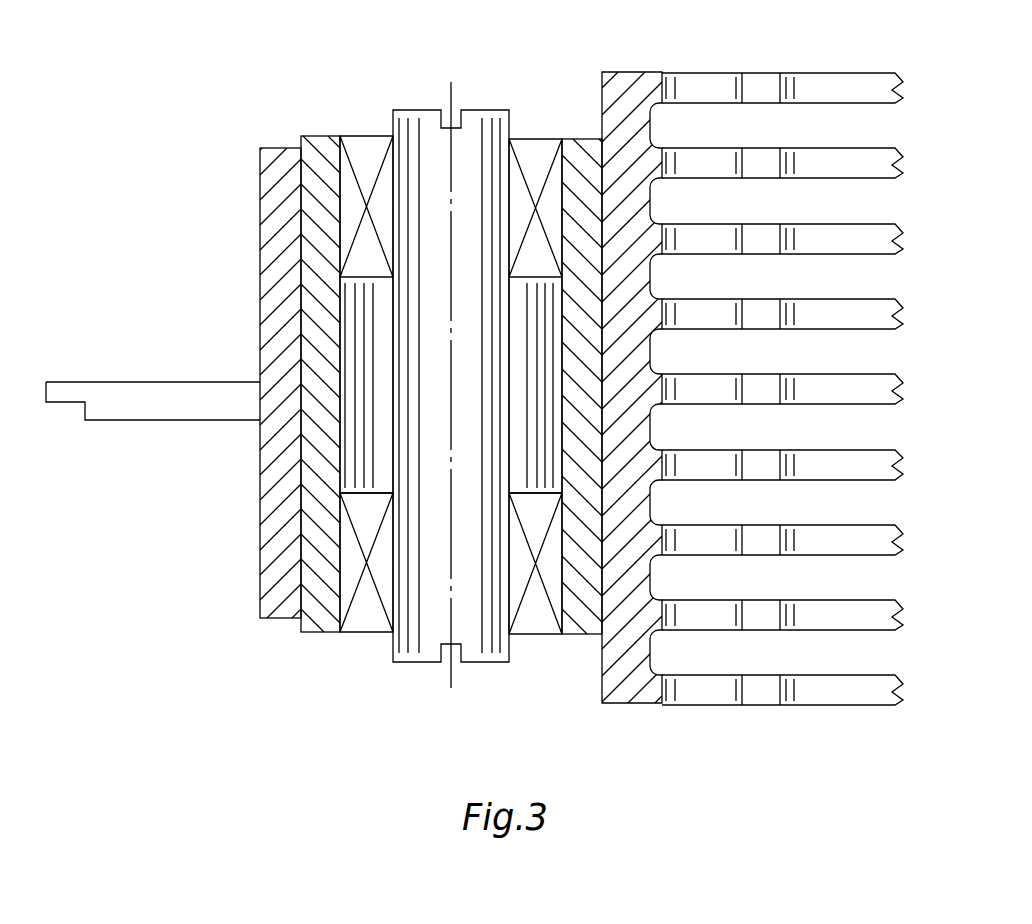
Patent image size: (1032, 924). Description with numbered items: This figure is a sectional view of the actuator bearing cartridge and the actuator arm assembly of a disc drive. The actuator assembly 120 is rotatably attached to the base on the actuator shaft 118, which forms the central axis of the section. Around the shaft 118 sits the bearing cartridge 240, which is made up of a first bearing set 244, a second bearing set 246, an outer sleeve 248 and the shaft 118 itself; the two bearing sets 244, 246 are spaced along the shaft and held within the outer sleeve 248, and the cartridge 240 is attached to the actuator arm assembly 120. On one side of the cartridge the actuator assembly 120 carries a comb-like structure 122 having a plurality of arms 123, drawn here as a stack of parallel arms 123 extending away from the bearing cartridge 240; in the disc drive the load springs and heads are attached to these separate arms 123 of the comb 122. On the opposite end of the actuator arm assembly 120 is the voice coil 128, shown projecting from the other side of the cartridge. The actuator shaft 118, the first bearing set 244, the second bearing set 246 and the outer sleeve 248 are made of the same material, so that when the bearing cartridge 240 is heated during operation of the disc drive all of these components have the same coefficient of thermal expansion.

The actuator shaft 118 is at (419, 110).
The actuator assembly 120 is at (272, 148).
The comb-like structure 122 is at (840, 83).
The arms 123 is at (850, 310).
The voice coil 128 is at (65, 382).
The bearing cartridge 240 is at (317, 136).
The first bearing set 244 is at (537, 139).
The second bearing set 246 is at (531, 634).
The outer sleeve 248 is at (322, 632).